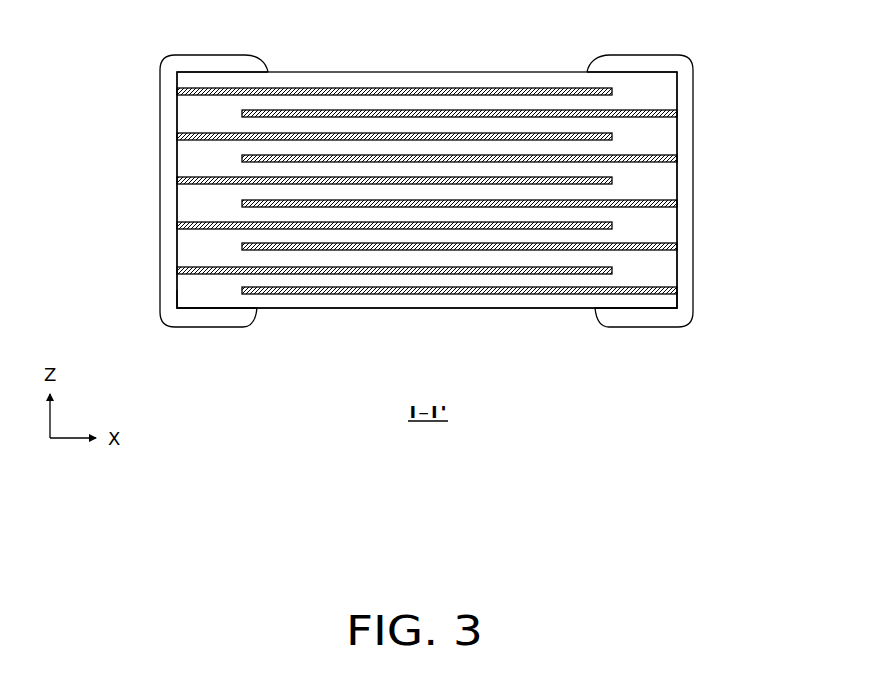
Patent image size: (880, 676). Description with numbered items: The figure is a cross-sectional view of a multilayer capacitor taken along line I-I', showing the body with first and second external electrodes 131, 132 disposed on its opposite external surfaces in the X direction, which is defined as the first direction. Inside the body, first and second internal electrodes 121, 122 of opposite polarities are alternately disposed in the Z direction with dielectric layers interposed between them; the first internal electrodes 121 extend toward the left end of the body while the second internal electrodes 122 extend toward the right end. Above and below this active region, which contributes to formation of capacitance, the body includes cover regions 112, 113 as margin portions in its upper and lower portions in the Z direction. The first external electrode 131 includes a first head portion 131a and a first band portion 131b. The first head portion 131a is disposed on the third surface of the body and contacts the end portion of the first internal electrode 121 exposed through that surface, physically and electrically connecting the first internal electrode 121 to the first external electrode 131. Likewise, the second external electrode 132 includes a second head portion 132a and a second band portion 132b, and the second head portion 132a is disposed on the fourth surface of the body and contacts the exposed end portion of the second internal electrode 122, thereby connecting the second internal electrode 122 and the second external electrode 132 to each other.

The cover region 112 is at (432, 74).
The cover region 113 is at (458, 308).
The first internal electrode 121 is at (325, 88).
The second internal electrode 122 is at (538, 112).
The first external electrode 131 is at (139, 177).
The first head portion 131a is at (160, 96).
The first band portion 131b is at (198, 54).
The second external electrode 132 is at (716, 177).
The second head portion 132a is at (694, 96).
The second band portion 132b is at (652, 54).